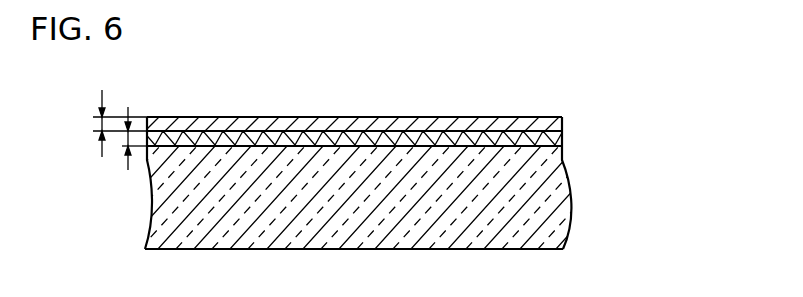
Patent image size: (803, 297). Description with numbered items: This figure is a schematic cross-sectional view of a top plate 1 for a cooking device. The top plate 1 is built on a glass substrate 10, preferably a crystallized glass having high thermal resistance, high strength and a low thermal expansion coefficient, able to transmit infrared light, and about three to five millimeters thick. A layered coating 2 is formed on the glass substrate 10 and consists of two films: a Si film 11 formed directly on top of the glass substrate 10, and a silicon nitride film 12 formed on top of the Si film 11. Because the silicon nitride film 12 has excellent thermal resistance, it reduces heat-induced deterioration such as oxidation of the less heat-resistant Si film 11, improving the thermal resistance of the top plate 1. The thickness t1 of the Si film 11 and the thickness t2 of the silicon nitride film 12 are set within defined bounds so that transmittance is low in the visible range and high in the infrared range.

The top plate for a cooking device 1 is at (379, 165).
The layered coating 2 is at (418, 126).
The glass substrate 10 is at (565, 197).
The Si film 11 is at (399, 147).
The silicon nitride film 12 is at (563, 124).
The thickness of the Si film t1 is at (127, 138).
The thickness of the silicon nitride film t2 is at (100, 126).